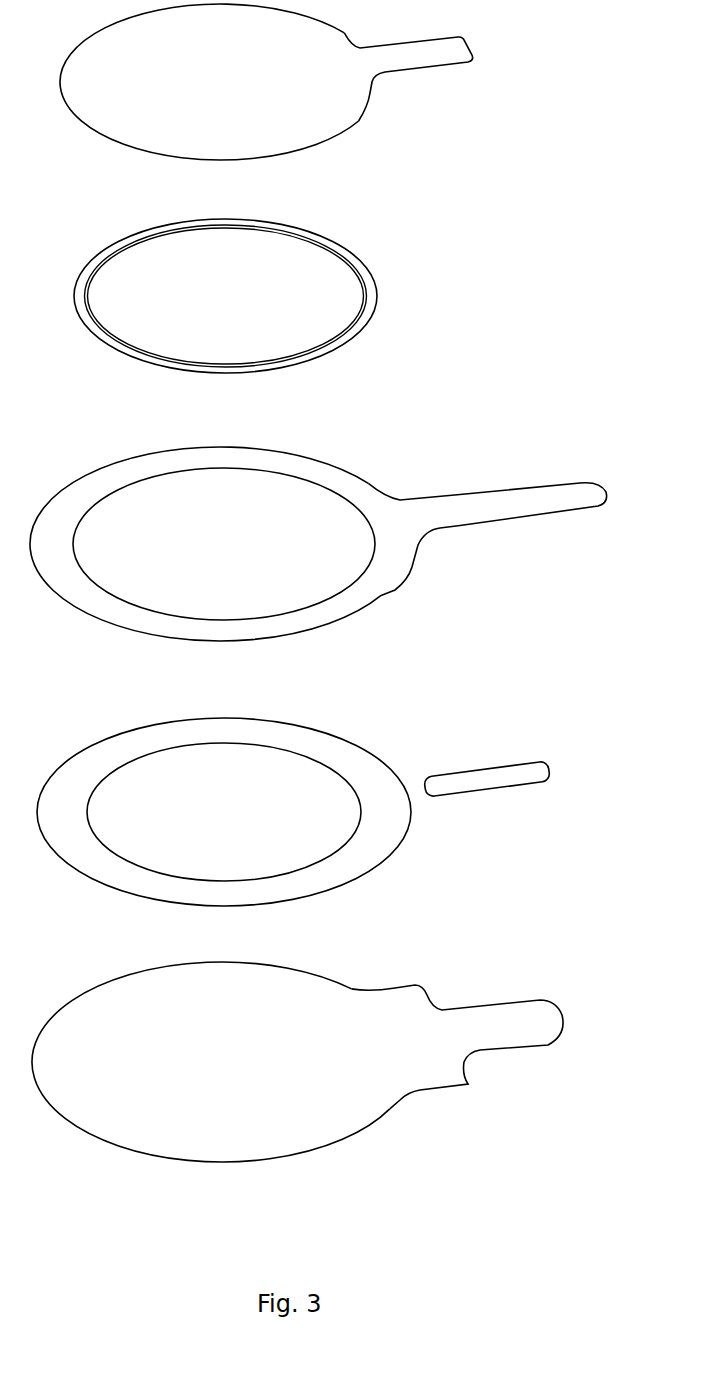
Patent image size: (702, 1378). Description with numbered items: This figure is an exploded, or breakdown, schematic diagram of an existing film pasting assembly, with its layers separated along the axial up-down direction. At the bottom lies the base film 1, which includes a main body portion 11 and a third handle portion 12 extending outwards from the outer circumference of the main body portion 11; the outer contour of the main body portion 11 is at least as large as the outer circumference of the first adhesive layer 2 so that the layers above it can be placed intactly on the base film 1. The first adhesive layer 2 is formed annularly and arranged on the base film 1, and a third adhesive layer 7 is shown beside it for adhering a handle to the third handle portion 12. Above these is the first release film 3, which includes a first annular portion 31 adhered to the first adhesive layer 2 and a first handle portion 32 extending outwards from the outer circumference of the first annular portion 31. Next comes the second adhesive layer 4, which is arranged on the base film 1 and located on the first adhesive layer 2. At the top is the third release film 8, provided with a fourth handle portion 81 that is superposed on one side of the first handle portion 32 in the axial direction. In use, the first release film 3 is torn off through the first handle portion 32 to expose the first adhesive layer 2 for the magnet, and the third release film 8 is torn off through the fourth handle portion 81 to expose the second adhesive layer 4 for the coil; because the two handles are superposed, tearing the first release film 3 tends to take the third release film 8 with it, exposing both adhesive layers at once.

The base film 1 is at (297, 1106).
The main body portion 11 is at (320, 1123).
The third handle portion 12 is at (533, 1032).
The first adhesive layer 2 is at (57, 821).
The first release film 3 is at (318, 567).
The first annular portion 31 is at (397, 565).
The first handle portion 32 is at (580, 500).
The second adhesive layer 4 is at (79, 295).
The third adhesive layer 7 is at (497, 777).
The third release film 8 is at (72, 97).
The fourth handle portion 81 is at (428, 62).